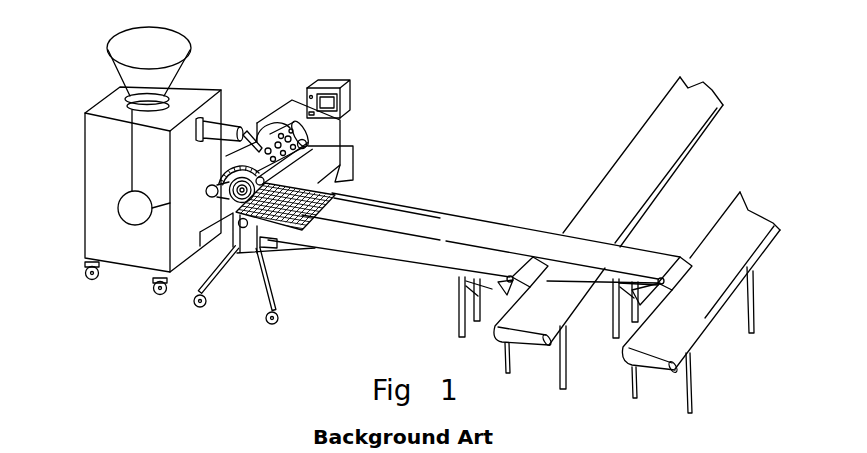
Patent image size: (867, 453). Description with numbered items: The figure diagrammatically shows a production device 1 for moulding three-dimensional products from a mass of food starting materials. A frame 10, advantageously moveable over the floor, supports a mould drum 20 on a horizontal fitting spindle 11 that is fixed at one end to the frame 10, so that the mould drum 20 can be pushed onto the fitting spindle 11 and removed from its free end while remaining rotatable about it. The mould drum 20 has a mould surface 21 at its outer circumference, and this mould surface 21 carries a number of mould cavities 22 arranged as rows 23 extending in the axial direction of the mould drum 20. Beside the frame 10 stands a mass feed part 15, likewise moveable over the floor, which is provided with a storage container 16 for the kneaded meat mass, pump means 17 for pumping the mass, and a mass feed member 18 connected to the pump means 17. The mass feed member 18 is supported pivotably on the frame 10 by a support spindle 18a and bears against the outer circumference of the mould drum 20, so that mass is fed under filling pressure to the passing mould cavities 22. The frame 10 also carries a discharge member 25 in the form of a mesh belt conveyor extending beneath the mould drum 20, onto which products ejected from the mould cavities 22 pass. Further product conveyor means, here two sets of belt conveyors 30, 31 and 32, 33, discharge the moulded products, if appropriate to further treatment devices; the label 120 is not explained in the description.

The production device 1 is at (418, 90).
The frame 10 is at (307, 144).
The fitting spindle 11 is at (212, 231).
The mass feed part 15 is at (133, 291).
The storage container 16 is at (177, 72).
The pump means 17 is at (118, 211).
The mass feed member 18 is at (273, 137).
The support spindle 18a is at (223, 183).
The mould drum 20 is at (277, 128).
The mould surface 21 is at (350, 187).
The mould cavities 22 is at (335, 176).
The rows 23 is at (262, 232).
The discharge member 25 is at (258, 222).
The belt conveyor 30 is at (397, 248).
The belt conveyor 31 is at (638, 148).
The belt conveyor 32 is at (508, 232).
The belt conveyor 33 is at (727, 230).
The base 120 is at (352, 152).